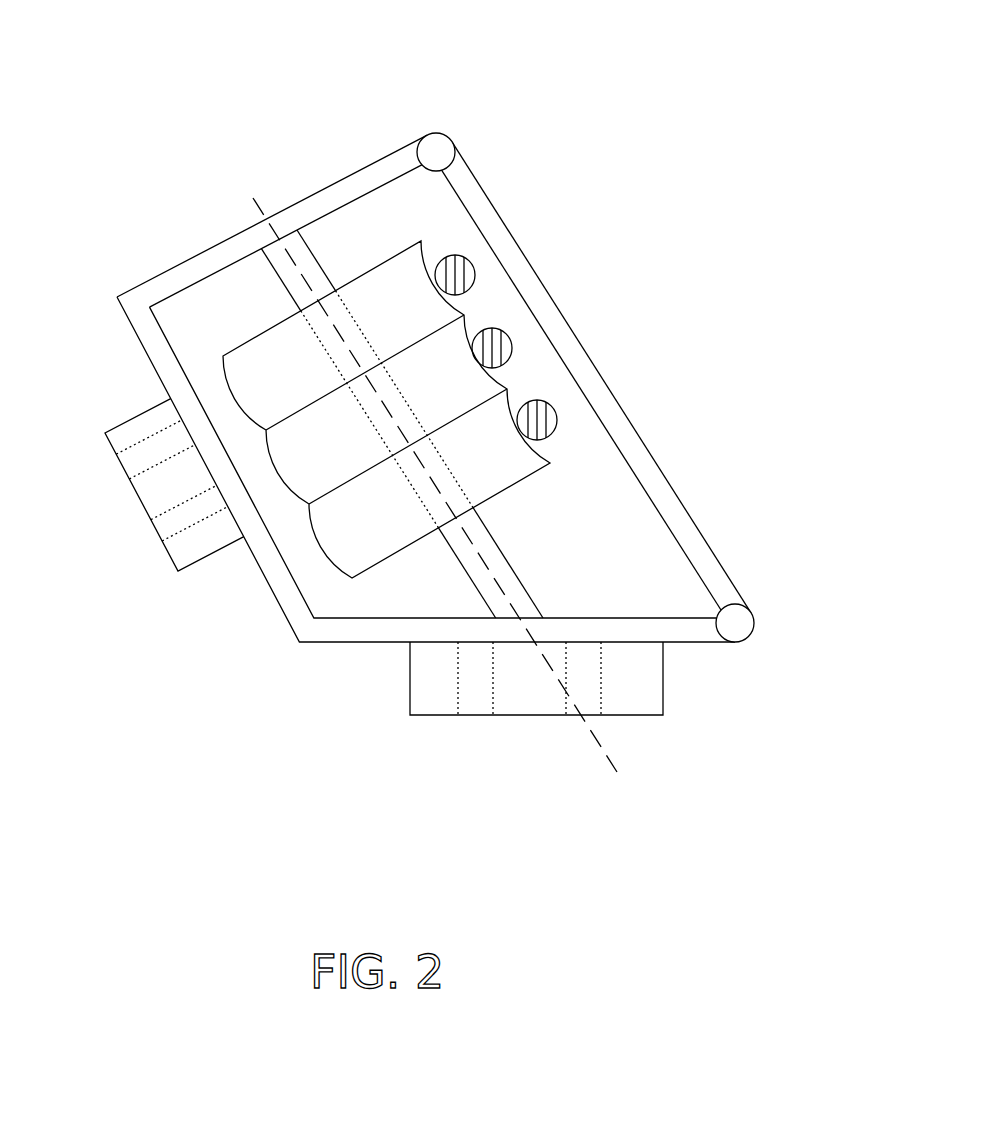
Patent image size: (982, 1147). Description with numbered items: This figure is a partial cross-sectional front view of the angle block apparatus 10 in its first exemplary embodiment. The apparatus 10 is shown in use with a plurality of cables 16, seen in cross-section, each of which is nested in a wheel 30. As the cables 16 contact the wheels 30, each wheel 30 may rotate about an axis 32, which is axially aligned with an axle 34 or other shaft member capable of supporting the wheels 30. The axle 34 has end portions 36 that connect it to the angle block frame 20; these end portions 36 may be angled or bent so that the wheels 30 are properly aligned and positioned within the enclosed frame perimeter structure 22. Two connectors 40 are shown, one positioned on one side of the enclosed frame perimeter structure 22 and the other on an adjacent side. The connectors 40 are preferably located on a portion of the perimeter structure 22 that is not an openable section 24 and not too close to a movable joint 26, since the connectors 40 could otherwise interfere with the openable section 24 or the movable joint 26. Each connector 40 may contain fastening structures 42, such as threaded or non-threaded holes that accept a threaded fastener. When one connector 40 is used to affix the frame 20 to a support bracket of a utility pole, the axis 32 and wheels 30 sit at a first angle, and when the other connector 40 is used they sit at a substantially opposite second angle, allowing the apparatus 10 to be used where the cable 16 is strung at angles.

The angle block apparatus 10 is at (600, 68).
The cables 16 is at (466, 257).
The angle block frame 20 is at (392, 135).
The enclosed frame perimeter structure 22 is at (163, 290).
The openable section 24 is at (622, 437).
The movable joint 26 is at (451, 135).
The wheel 30 is at (397, 285).
The axis 32 is at (230, 188).
The axle 34 is at (500, 540).
The end portions 36 is at (277, 275).
The connectors 40 is at (180, 555).
The fastening structures 42 is at (128, 465).